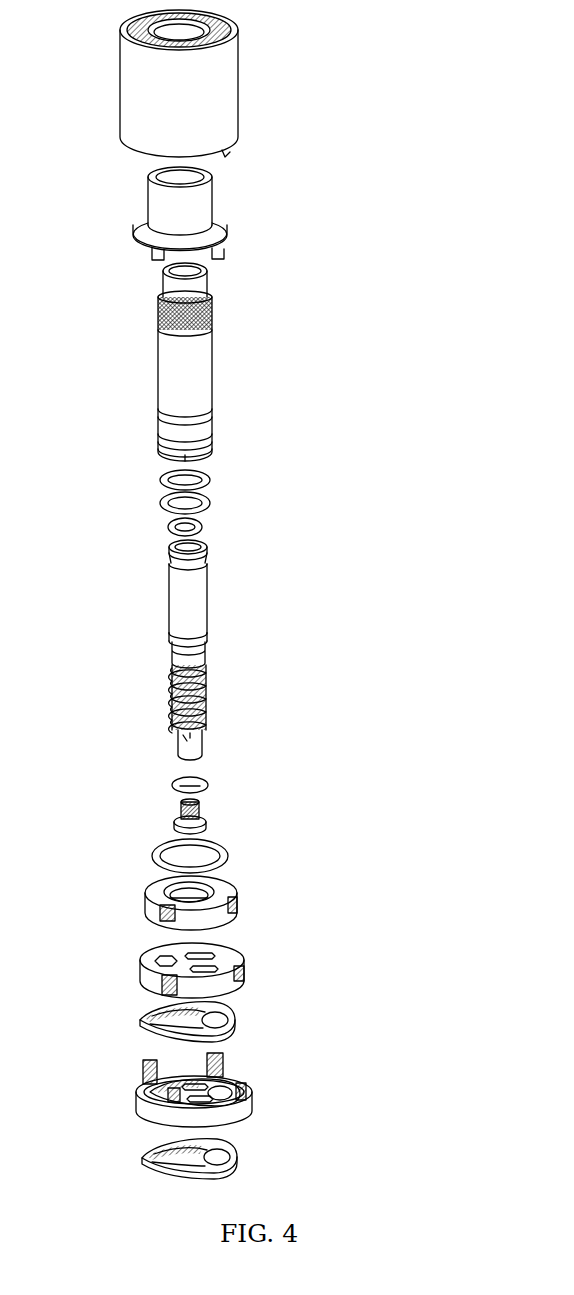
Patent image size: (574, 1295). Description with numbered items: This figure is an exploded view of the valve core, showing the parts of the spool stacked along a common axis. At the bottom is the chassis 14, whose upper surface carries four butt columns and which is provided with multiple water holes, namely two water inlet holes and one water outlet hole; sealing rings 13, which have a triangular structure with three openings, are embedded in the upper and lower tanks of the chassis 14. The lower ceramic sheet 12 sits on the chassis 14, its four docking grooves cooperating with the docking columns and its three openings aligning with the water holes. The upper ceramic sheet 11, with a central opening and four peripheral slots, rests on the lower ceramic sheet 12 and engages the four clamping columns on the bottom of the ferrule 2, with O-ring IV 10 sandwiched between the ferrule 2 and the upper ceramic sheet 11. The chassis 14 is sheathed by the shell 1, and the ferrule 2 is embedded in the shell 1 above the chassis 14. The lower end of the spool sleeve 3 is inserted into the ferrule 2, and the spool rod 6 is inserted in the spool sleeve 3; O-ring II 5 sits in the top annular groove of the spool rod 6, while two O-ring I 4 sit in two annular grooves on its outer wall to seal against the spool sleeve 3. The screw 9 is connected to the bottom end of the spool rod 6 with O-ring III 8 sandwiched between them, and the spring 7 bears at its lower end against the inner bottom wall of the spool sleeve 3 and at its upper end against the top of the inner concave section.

The shell 1 is at (240, 100).
The ferrule 2 is at (227, 218).
The spool sleeve 3 is at (211, 338).
The O-ring I 4 is at (210, 477).
The O-ring II 5 is at (203, 525).
The spool rod 6 is at (208, 598).
The spring 7 is at (207, 693).
The O-ring III 8 is at (210, 783).
The screw 9 is at (200, 812).
The O-ring IV 10 is at (233, 860).
The upper ceramic sheet 11 is at (238, 913).
The lower ceramic sheet 12 is at (247, 973).
The sealing rings 13 is at (236, 1033).
The chassis 14 is at (255, 1098).